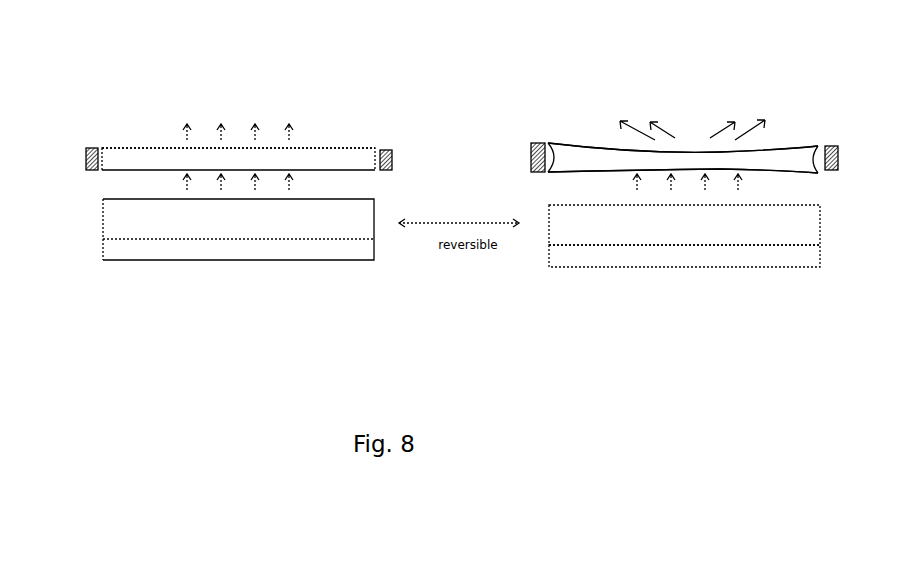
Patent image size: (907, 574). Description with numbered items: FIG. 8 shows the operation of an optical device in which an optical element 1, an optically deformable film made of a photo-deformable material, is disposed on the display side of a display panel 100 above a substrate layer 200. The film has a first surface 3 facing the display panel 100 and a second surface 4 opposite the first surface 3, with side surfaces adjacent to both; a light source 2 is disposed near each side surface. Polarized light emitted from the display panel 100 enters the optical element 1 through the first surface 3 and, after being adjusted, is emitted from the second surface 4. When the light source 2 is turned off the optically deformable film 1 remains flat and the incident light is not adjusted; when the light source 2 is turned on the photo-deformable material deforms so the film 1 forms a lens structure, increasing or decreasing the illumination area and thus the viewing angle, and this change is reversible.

The optical element 1 is at (331, 160).
The light source 2 is at (392, 158).
The first surface 3 is at (300, 170).
The second surface 4 is at (318, 148).
The display panel 100 is at (124, 219).
The substrate 200 is at (124, 250).